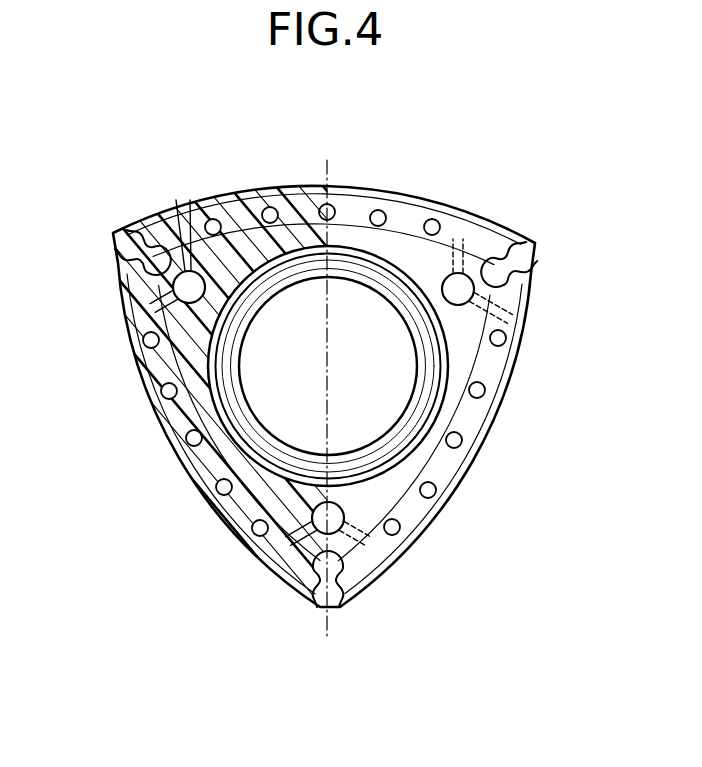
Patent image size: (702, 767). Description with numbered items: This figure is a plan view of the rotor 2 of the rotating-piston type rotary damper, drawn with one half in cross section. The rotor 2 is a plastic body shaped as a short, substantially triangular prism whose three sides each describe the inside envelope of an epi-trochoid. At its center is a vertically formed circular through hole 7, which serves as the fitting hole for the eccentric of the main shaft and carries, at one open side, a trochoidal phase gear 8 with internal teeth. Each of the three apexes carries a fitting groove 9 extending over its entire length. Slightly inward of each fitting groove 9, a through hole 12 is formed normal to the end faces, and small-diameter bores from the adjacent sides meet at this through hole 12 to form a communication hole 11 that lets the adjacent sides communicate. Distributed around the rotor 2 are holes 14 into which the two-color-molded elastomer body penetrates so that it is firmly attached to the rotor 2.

The rotor 2 is at (257, 187).
The circular through hole 7 is at (292, 393).
The trochoidal phase gear 8 is at (432, 392).
The fitting groove 9 is at (133, 232).
The communication hole 11 is at (185, 268).
The through hole 12 is at (177, 276).
The holes 14 is at (333, 204).